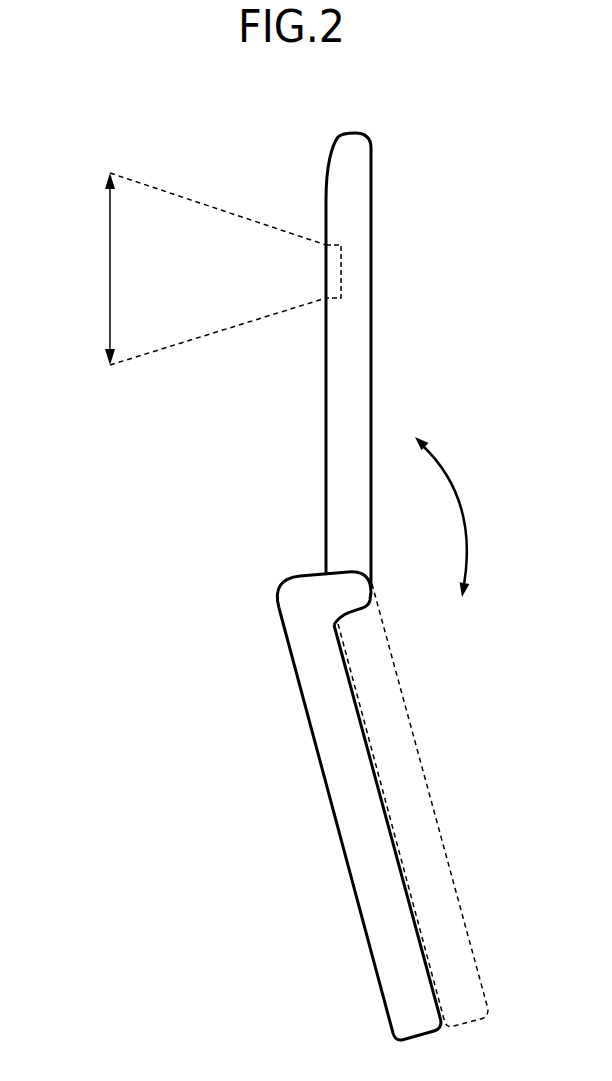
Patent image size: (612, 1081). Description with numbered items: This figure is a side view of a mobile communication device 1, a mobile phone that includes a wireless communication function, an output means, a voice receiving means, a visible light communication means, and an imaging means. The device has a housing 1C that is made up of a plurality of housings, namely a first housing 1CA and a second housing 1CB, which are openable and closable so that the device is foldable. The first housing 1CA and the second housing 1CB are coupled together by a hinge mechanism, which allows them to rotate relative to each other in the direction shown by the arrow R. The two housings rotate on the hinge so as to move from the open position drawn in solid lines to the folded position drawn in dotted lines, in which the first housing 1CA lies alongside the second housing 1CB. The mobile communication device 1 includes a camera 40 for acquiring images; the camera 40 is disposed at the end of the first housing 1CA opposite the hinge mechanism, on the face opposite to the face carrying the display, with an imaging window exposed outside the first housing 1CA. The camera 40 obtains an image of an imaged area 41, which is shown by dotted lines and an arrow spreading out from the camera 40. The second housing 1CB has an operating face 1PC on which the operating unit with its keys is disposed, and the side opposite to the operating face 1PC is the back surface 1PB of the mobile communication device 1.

The mobile communication device 1 is at (229, 153).
The housing 1C is at (87, 518).
The first housing 1CA is at (345, 524).
The second housing 1CB is at (307, 673).
The back surface 1PB is at (334, 849).
The operating face 1PC is at (422, 925).
The camera 40 is at (337, 300).
The imaged area 41 is at (110, 287).
The arrow R is at (463, 500).